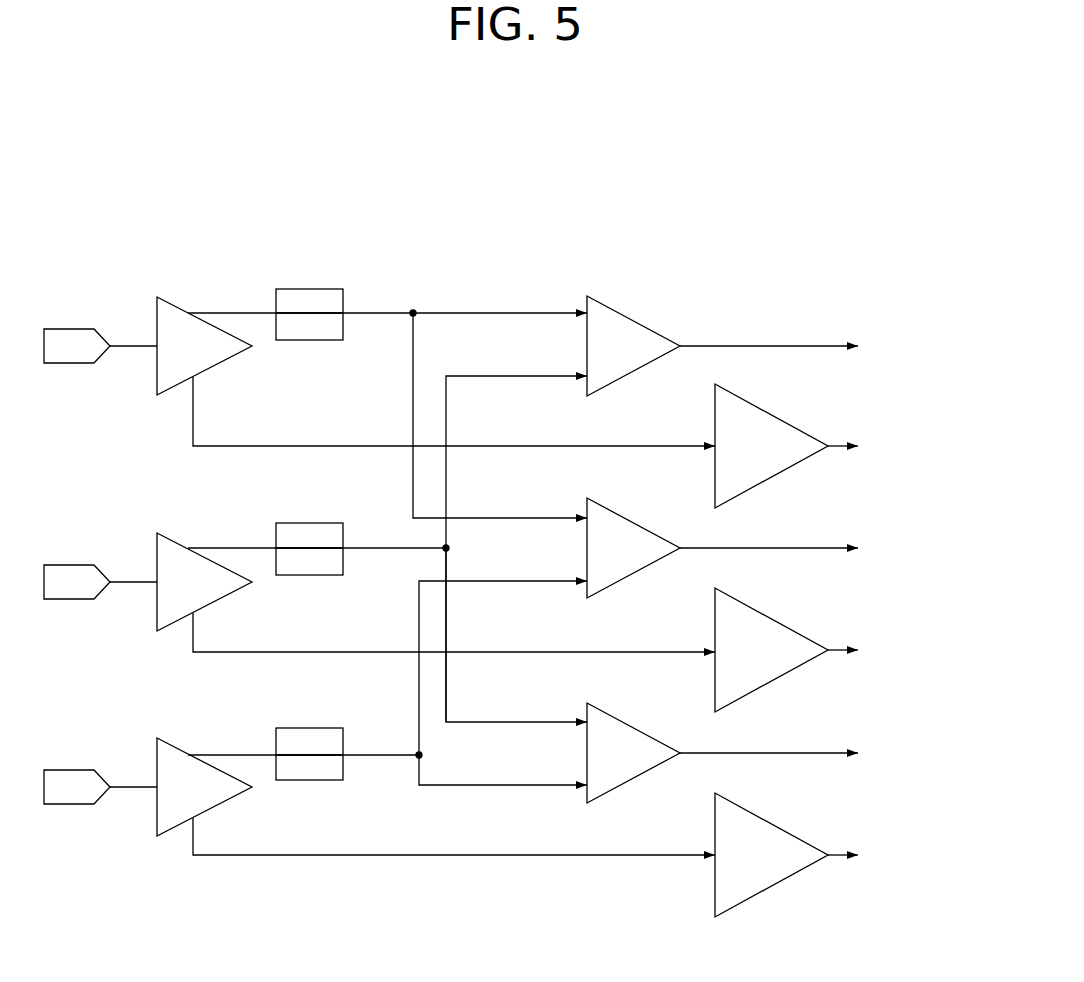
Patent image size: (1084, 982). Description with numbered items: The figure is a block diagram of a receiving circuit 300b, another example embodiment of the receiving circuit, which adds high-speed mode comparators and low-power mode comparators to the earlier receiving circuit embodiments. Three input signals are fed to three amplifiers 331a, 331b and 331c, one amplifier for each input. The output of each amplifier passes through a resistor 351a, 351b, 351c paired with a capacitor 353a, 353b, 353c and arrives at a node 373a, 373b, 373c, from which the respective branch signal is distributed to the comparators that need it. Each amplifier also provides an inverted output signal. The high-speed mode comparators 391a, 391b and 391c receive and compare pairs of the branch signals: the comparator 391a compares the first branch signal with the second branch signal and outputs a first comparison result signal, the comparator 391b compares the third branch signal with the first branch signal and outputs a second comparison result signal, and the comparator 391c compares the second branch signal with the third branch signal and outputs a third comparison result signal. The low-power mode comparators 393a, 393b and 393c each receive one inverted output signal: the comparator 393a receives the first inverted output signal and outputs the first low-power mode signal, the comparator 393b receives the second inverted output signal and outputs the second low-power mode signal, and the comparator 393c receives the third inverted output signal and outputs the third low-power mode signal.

The receiving circuit 300b is at (465, 166).
The amplifier 331a is at (157, 297).
The amplifier 331b is at (157, 533).
The amplifier 331c is at (157, 738).
The resistor 351a is at (310, 289).
The resistor 351b is at (310, 523).
The resistor 351c is at (310, 728).
The capacitor 353a is at (310, 340).
The capacitor 353b is at (310, 575).
The capacitor 353c is at (310, 780).
The first node 373a is at (410, 310).
The second node 373b is at (443, 551).
The third node 373c is at (418, 758).
The high-speed mode comparator 391a is at (630, 318).
The high-speed mode comparator 391b is at (630, 520).
The high-speed mode comparator 391c is at (630, 725).
The low-power mode comparator 393a is at (795, 427).
The low-power mode comparator 393b is at (795, 631).
The low-power mode comparator 393c is at (795, 835).